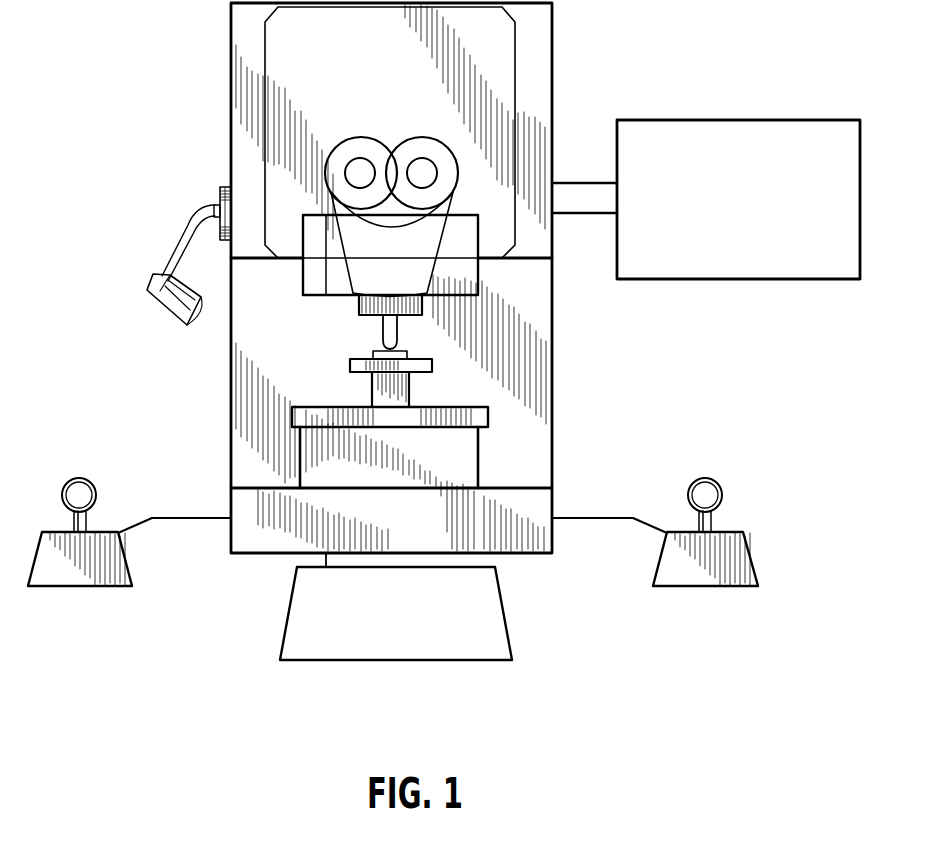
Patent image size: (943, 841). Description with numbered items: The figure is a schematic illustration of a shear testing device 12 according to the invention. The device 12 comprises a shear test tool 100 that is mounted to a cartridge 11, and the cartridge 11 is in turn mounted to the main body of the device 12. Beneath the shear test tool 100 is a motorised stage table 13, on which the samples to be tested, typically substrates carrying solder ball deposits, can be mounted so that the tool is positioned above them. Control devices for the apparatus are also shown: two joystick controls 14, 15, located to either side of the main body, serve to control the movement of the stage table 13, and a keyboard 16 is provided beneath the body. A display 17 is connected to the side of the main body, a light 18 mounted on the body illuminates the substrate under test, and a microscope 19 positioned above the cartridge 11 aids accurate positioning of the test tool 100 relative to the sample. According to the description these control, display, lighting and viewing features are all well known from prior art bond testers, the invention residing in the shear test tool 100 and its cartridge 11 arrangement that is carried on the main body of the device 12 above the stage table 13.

The cartridge 11 is at (318, 298).
The shear testing device 12 is at (287, 90).
The motorised stage table 13 is at (432, 365).
The joystick control 14 is at (60, 588).
The joystick control 15 is at (697, 587).
The keyboard 16 is at (381, 662).
The display 17 is at (710, 120).
The light 18 is at (150, 278).
The microscope 19 is at (371, 140).
The shear test tool 100 is at (380, 333).